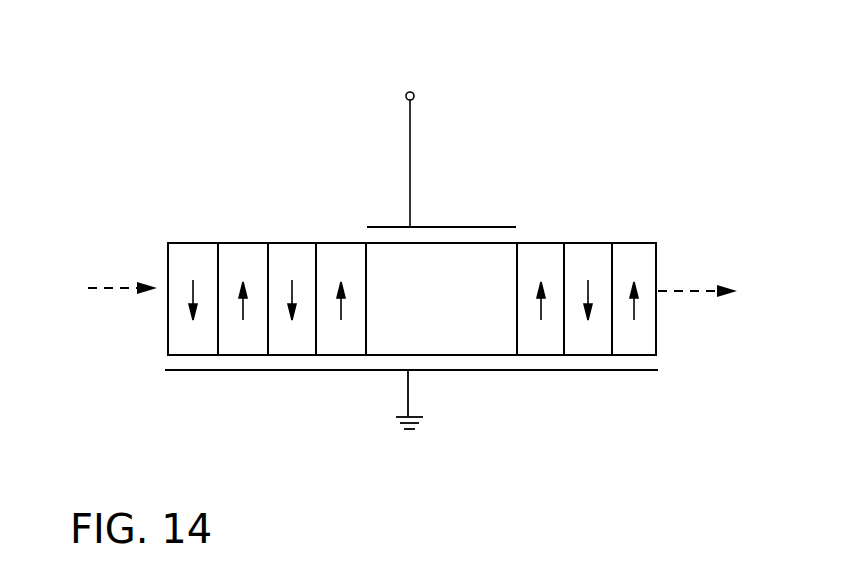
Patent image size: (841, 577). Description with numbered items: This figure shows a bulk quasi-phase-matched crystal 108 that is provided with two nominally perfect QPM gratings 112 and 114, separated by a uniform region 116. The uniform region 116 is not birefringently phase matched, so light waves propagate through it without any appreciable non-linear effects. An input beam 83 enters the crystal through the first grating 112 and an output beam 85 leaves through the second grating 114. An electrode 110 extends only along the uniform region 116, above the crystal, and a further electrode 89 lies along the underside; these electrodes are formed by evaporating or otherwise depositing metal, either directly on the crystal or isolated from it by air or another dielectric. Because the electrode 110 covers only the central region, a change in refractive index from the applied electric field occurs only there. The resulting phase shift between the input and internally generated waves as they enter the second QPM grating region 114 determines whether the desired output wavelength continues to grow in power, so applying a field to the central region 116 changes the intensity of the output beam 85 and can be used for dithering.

The input beam 83 is at (102, 285).
The output beam 85 is at (696, 290).
The electrode 89 is at (573, 372).
The crystal 108 is at (163, 316).
The electrode 110 is at (486, 227).
The QPM grating 112 is at (364, 235).
The second QPM grating region 114 is at (653, 237).
The uniform region 116 is at (395, 332).